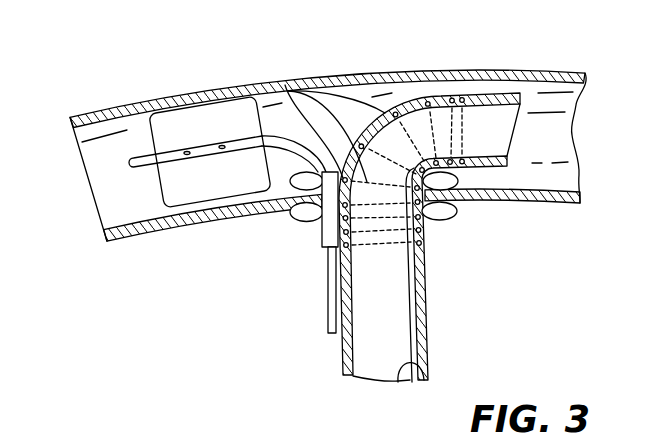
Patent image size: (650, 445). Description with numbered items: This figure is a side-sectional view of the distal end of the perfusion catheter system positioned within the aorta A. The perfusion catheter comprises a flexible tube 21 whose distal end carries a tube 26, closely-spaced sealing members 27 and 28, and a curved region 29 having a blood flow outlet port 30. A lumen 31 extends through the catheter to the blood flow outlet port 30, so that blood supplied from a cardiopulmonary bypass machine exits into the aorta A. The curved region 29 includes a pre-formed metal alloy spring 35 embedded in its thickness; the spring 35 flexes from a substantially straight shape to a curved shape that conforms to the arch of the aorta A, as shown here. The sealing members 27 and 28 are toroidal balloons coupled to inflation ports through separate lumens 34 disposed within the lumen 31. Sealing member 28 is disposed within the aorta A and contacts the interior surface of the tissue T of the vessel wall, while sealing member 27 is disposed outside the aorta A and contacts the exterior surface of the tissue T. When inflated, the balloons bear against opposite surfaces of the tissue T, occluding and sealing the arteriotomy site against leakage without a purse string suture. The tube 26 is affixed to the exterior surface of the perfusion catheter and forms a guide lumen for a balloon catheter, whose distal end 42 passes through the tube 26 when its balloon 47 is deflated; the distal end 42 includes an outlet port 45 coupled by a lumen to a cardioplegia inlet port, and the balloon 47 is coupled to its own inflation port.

The aorta A is at (525, 70).
The tissue T is at (208, 216).
The flexible tube 21 is at (430, 318).
The tube 26 is at (320, 240).
The sealing member 27 is at (445, 219).
The sealing member 28 is at (457, 209).
The curved region 29 is at (408, 100).
The blood flow outlet port 30 is at (482, 122).
The lumen 31 is at (360, 348).
The lumens 34 is at (400, 384).
The pre-formed metal alloy spring 35 is at (285, 85).
The distal end 42 is at (328, 280).
The outlet port 45 is at (132, 167).
The balloon 47 is at (200, 117).